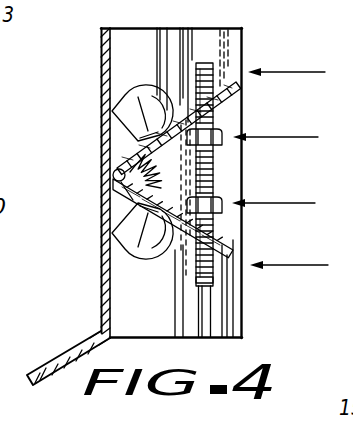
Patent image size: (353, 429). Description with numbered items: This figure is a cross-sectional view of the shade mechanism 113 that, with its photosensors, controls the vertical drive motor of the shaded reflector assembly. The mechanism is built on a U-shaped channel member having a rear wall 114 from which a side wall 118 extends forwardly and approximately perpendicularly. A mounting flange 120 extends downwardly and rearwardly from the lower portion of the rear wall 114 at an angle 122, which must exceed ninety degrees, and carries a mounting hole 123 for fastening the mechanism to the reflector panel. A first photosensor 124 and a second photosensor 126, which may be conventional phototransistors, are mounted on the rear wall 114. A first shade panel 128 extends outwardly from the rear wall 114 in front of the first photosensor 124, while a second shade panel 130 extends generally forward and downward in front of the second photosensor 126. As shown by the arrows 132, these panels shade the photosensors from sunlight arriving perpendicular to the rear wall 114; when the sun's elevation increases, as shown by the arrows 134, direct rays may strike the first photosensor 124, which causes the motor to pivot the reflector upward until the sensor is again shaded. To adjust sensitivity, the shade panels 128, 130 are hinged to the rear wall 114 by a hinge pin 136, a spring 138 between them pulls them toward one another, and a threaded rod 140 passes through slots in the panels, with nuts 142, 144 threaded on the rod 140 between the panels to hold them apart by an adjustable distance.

The shade mechanism 113 is at (122, 16).
The rear wall 114 is at (100, 147).
The side wall 118 is at (236, 39).
The mounting flange 120 is at (38, 367).
The angle 122 is at (77, 326).
The mounting hole 123 is at (68, 350).
The first photosensor 124 is at (160, 86).
The second photosensor 126 is at (158, 257).
The first shade panel 128 is at (245, 104).
The second shade panel 130 is at (232, 250).
The arrows 132 is at (293, 72).
The arrows 134 is at (124, 43).
The hinge pin 136 is at (100, 182).
The spring 138 is at (100, 204).
The threaded rod 140 is at (193, 285).
The nut 142 is at (222, 143).
The nut 144 is at (214, 200).